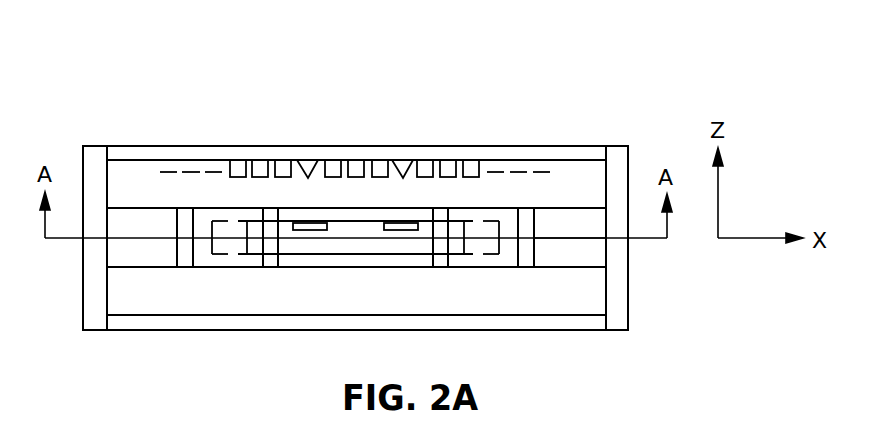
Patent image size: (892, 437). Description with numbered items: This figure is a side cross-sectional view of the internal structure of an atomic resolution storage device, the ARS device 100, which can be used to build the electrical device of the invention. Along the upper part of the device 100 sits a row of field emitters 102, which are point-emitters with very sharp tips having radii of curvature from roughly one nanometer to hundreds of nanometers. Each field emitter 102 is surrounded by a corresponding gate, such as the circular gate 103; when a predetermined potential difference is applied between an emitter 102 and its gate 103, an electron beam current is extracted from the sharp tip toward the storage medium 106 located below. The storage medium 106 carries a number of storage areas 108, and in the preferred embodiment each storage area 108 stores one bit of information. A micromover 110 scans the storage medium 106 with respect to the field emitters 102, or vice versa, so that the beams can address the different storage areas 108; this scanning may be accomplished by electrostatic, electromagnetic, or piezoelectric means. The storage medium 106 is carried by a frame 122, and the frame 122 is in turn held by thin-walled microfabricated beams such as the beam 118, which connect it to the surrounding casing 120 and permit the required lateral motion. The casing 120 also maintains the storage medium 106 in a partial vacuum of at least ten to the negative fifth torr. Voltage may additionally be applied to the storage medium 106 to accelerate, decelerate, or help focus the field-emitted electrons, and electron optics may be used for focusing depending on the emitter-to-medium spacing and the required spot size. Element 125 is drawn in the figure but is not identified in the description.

The ARS device 100 is at (124, 89).
The field emitter 102 is at (403, 168).
The circular gate 103 is at (332, 172).
The storage medium 106 is at (222, 248).
The storage area 108 is at (310, 226).
The micromover 110 is at (142, 267).
The thin-walled microfabricated beam 118 is at (586, 262).
The casing 120 is at (617, 267).
The frame 122 is at (537, 228).
The contact pad 125 is at (356, 170).